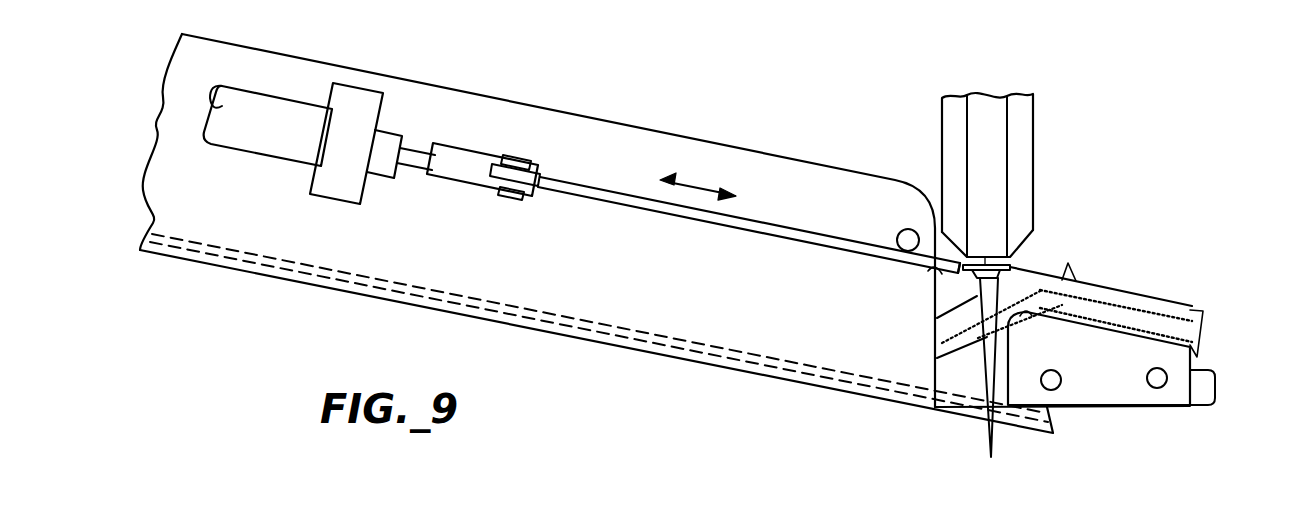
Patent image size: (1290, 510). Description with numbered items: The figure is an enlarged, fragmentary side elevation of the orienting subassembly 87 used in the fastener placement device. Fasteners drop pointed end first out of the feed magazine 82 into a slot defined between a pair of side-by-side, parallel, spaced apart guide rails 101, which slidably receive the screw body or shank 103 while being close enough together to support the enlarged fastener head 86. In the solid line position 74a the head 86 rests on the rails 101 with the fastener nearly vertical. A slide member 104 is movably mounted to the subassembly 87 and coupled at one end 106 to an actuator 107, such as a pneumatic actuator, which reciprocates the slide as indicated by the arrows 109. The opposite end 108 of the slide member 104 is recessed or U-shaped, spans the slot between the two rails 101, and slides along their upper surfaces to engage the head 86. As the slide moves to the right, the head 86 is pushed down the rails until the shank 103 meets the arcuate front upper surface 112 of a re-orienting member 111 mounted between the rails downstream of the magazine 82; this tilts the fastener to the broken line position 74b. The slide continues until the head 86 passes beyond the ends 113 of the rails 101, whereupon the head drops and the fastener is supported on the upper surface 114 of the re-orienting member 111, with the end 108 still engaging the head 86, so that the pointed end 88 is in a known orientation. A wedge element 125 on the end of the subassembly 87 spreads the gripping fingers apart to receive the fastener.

The orienting subassembly 87 is at (655, 120).
The actuator 107 is at (248, 105).
The end of slide member 106 is at (505, 160).
The slide member 104 is at (637, 203).
The opposite end of slide member 108 is at (940, 255).
The arrows 109 is at (683, 180).
The feed magazine 82 is at (1023, 135).
The fastener head 86 is at (985, 262).
The pointed end 88 is at (1000, 435).
The fastener position 74b is at (1068, 270).
The fastener position 74a is at (937, 318).
The screw body or shank 103 is at (937, 358).
The guide rails 101 is at (927, 267).
The arcuate front upper surface 112 is at (1027, 315).
The ends of rails 113 is at (1200, 318).
The upper surface of re-orienting member 114 is at (1200, 350).
The re-orienting member 111 is at (1120, 398).
The wedge element 125 is at (1200, 397).